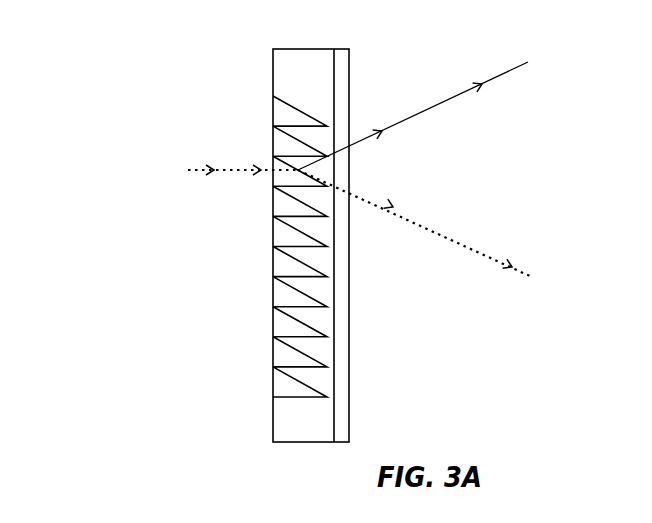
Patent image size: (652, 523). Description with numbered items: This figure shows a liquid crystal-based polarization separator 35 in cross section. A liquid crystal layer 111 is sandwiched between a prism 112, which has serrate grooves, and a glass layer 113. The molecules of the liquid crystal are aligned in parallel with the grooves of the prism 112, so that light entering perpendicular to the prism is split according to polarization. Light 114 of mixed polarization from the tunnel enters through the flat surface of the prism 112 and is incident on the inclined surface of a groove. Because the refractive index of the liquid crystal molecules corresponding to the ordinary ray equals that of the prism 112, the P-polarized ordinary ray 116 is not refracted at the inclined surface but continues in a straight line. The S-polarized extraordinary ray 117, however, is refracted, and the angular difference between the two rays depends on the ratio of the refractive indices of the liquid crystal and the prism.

The optical film / light redirecting structure 35 is at (590, 120).
The liquid crystal layer 111 is at (304, 55).
The prism 112 is at (280, 112).
The glass layer 113 is at (344, 73).
The light 114 is at (242, 172).
The ordinary ray 116 is at (492, 255).
The extraordinary ray 117 is at (505, 71).